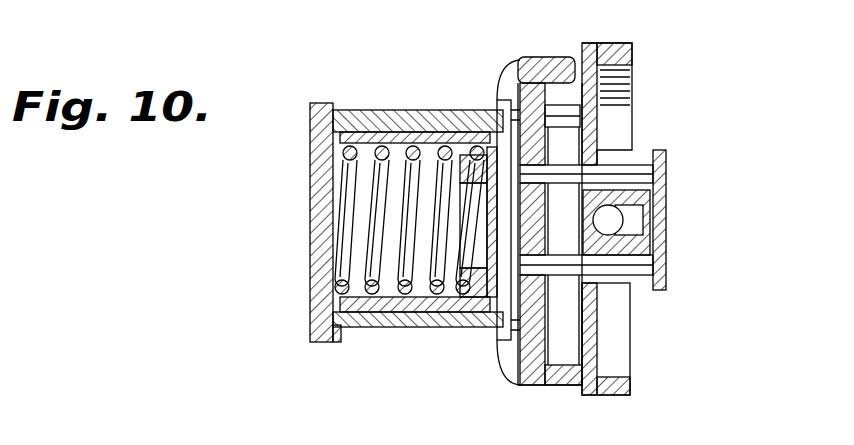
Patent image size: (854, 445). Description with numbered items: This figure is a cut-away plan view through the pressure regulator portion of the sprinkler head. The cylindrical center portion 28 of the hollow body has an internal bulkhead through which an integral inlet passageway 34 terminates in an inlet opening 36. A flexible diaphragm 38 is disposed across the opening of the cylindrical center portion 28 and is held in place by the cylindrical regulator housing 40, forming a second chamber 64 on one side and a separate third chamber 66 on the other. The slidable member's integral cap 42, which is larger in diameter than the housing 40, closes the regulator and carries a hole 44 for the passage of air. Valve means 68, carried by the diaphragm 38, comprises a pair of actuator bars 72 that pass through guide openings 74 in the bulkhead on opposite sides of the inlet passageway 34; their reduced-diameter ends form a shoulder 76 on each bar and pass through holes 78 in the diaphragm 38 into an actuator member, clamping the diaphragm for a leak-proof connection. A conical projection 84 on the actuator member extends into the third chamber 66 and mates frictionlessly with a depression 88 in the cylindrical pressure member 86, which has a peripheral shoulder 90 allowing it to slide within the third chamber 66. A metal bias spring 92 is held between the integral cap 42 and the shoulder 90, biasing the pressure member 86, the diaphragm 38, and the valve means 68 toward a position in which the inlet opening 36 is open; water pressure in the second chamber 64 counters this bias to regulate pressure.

The cylindrical center portion 28 is at (603, 37).
The inlet passageway 34 is at (648, 182).
The inlet opening 36 is at (623, 218).
The flexible diaphragm 38 is at (510, 115).
The cylindrical regulator housing 40 is at (358, 110).
The integral cap 42 is at (320, 173).
The hole 44 is at (330, 220).
The second chamber 64 is at (565, 313).
The third chamber 66 is at (360, 252).
The valve means 68 is at (668, 265).
The actuator bars 72 is at (640, 160).
The guide openings 74 is at (631, 160).
The shoulder 76 is at (540, 287).
The holes 78 is at (543, 100).
The conical projection 84 is at (429, 132).
The cylindrical pressure member 86 is at (368, 327).
The depression 88 is at (510, 297).
The shoulder 90 is at (437, 312).
The bias spring 92 is at (340, 292).